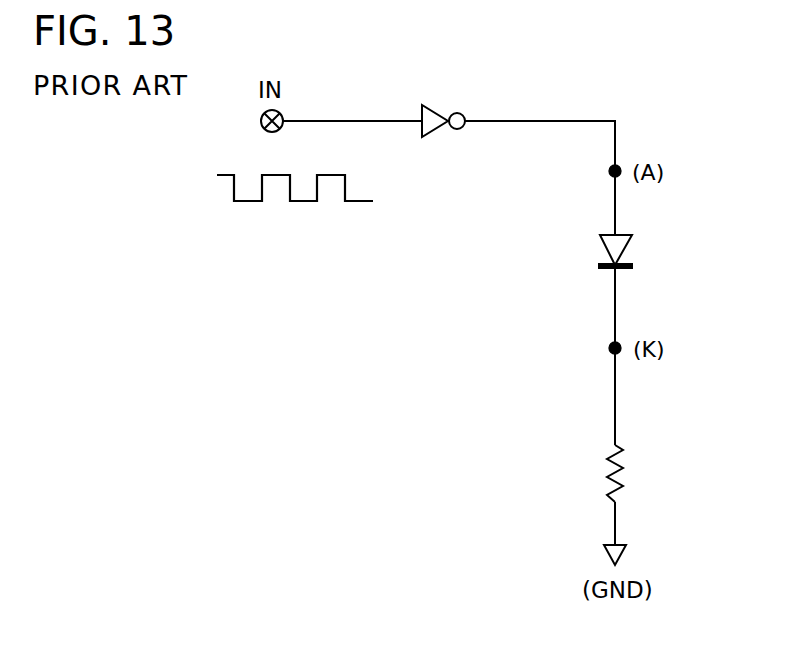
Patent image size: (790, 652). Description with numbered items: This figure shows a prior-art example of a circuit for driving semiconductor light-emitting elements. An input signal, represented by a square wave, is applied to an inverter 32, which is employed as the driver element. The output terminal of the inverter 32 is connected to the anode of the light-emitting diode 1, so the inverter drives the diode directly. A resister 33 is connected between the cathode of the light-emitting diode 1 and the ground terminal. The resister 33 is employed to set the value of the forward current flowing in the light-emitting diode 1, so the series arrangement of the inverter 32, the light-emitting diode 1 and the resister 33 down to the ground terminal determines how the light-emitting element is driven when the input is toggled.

The inverter 32 is at (433, 106).
The LED 1 is at (642, 265).
The resister 33 is at (627, 470).